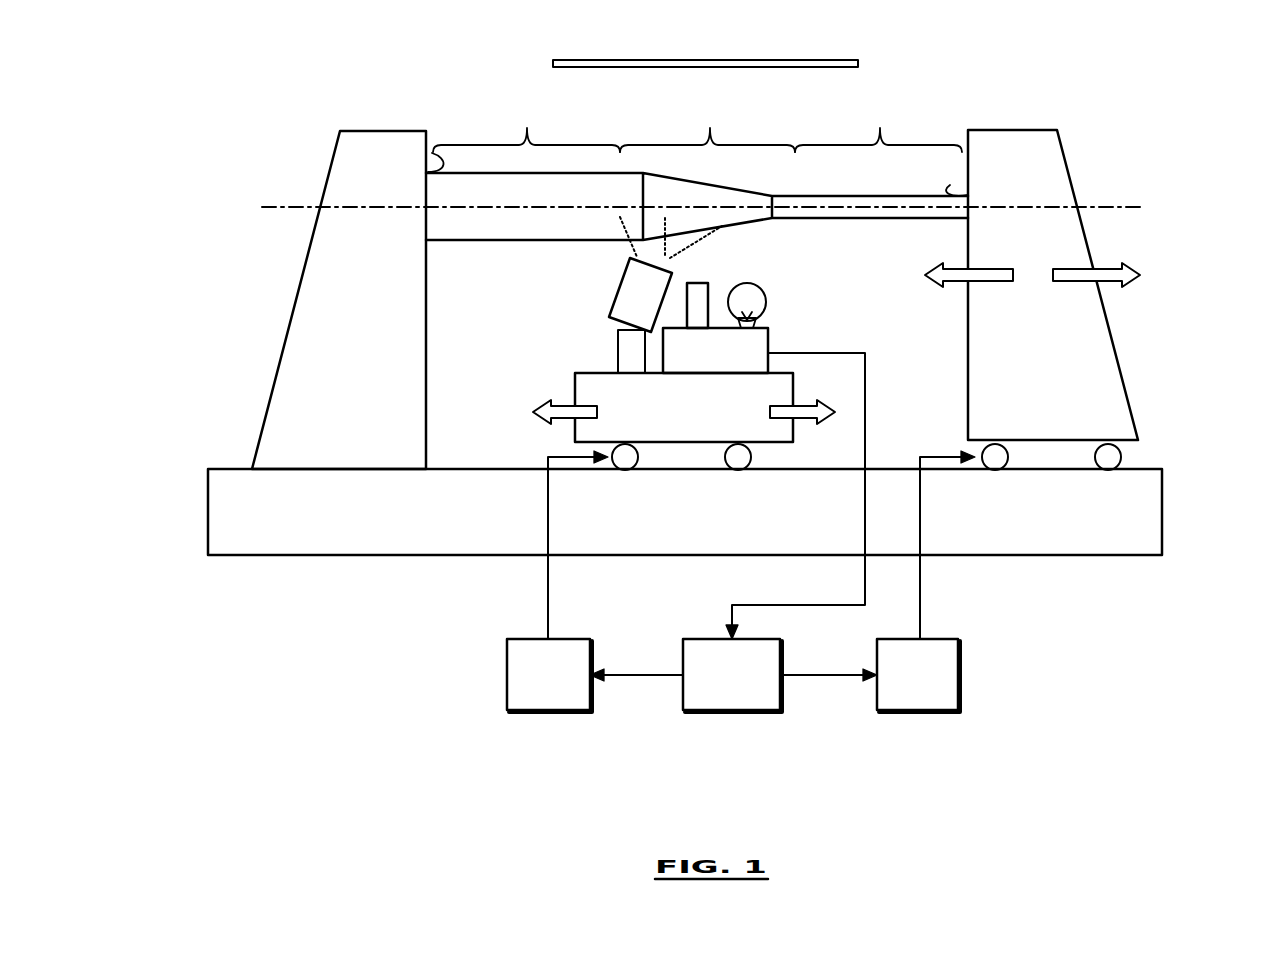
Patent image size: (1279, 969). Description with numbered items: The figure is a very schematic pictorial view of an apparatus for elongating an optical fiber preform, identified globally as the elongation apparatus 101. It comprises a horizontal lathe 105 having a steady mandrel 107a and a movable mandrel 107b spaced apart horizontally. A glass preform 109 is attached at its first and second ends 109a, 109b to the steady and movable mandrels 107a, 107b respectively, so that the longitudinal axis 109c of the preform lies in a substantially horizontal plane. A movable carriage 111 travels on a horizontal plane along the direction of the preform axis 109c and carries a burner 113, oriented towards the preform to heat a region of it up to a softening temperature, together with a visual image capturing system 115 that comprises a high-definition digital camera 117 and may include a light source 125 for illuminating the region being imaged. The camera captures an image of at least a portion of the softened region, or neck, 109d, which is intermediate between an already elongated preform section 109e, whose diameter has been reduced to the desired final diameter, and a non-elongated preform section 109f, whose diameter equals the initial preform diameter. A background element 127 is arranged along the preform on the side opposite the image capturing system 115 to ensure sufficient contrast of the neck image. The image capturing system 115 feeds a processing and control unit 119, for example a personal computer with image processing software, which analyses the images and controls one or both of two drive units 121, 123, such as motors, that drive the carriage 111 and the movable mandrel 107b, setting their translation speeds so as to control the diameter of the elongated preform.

The elongation apparatus 101 is at (224, 91).
The horizontal lathe 105 is at (270, 317).
The steady mandrel 107a is at (300, 397).
The movable mandrel 107b is at (1107, 375).
The glass preform 109 is at (477, 256).
The first preform end 109a is at (432, 153).
The second preform end 109b is at (950, 185).
The longitudinal axis 109c is at (258, 199).
The softened region (neck) 109d is at (707, 128).
The elongated preform section 109e is at (878, 130).
The non-elongated preform section 109f is at (526, 128).
The movable carriage 111 is at (562, 376).
The burner 113 is at (617, 305).
The visual image capturing system 115 is at (784, 336).
The high-definition digital camera 117 is at (700, 298).
The processing and control unit 119 is at (730, 700).
The drive unit 121 is at (510, 712).
The drive unit 123 is at (958, 708).
The light source 125 is at (766, 298).
The background element 127 is at (843, 61).